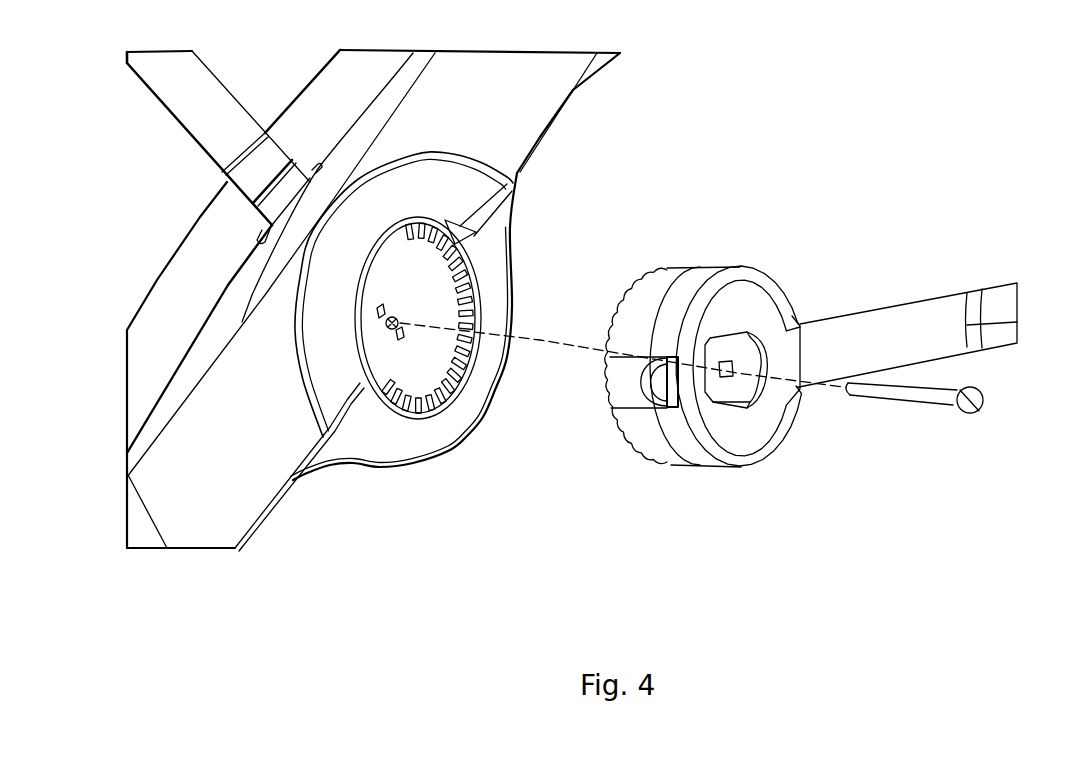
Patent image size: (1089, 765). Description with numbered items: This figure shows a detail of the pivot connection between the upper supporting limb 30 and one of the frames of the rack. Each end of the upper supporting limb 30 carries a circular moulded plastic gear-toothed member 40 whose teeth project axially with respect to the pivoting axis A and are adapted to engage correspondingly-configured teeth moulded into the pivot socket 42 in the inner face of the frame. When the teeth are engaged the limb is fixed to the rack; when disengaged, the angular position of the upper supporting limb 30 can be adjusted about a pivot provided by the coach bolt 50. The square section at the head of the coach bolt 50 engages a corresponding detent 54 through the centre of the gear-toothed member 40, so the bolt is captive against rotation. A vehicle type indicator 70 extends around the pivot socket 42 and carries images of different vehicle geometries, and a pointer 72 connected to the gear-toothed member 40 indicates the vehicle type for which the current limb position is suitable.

The vehicle type indicator 70 is at (452, 200).
The pivot socket 42 is at (442, 301).
The pivoting axis A is at (528, 338).
The gear-toothed member 40 is at (663, 287).
The detent 54 is at (722, 360).
The pointer 72 is at (634, 386).
The upper supporting limb 30 is at (853, 310).
The coach bolt 50 is at (897, 393).